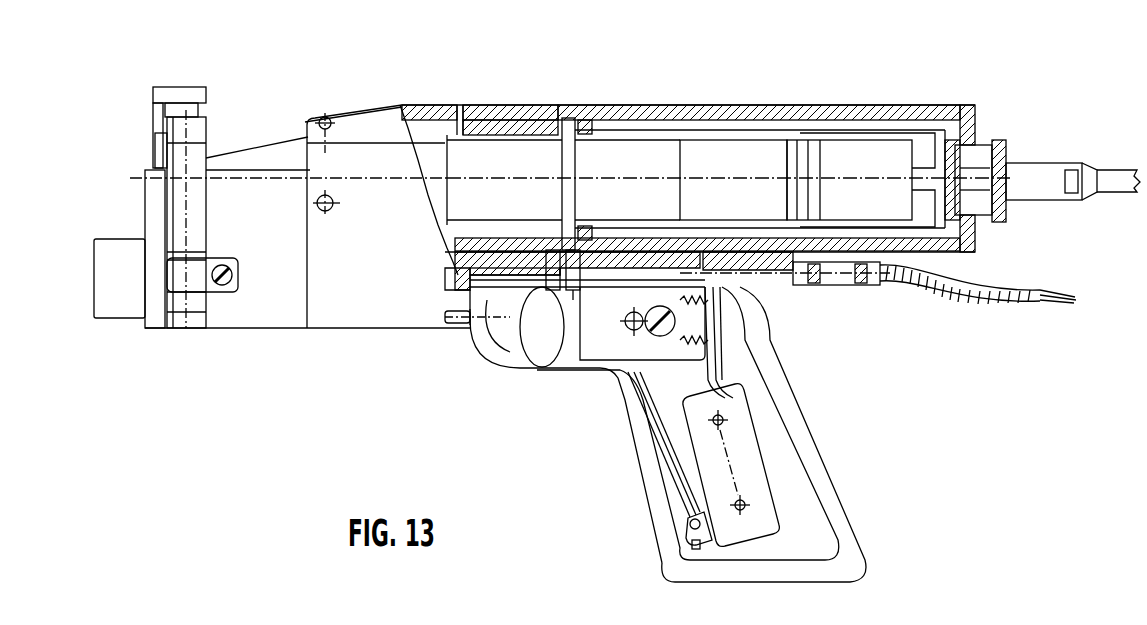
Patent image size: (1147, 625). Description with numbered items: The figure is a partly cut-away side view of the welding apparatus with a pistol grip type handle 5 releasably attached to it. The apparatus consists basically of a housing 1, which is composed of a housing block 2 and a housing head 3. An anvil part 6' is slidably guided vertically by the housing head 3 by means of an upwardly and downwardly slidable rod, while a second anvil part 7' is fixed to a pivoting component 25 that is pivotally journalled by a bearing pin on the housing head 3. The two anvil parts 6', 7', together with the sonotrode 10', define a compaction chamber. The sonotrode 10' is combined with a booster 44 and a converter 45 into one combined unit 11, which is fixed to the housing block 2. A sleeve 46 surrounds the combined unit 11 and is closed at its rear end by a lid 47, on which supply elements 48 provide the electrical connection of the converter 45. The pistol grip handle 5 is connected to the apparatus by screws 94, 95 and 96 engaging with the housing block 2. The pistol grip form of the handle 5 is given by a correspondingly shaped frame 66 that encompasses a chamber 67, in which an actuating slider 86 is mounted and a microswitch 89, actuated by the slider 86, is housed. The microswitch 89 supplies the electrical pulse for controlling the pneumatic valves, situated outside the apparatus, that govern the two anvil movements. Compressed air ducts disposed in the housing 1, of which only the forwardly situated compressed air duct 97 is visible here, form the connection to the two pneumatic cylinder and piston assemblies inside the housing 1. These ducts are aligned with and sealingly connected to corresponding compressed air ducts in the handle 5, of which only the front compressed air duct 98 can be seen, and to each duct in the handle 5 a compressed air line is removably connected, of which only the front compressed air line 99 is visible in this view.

The housing 1 is at (272, 332).
The housing block 2 is at (397, 329).
The housing head 3 is at (220, 325).
The handle 5 is at (822, 438).
The anvil part 6' is at (179, 98).
The anvil part 7' is at (211, 105).
The sonotrode 10' is at (258, 128).
The combined unit 11 is at (640, 138).
The pivoting component 25 is at (200, 208).
The booster 44 is at (512, 169).
The converter 45 is at (746, 169).
The sleeve 46 is at (720, 107).
The lid 47 is at (1002, 152).
The supply elements 48 is at (1058, 158).
The frame 66 is at (655, 475).
The chamber 67 is at (815, 510).
The actuating slider 86 is at (611, 333).
The microswitch 89 is at (775, 527).
The screw 94 is at (457, 322).
The screw 95 is at (532, 292).
The screw 96 is at (572, 292).
The compressed air duct 97 is at (457, 274).
The compressed air duct 98 is at (520, 305).
The compressed air line 99 is at (895, 283).